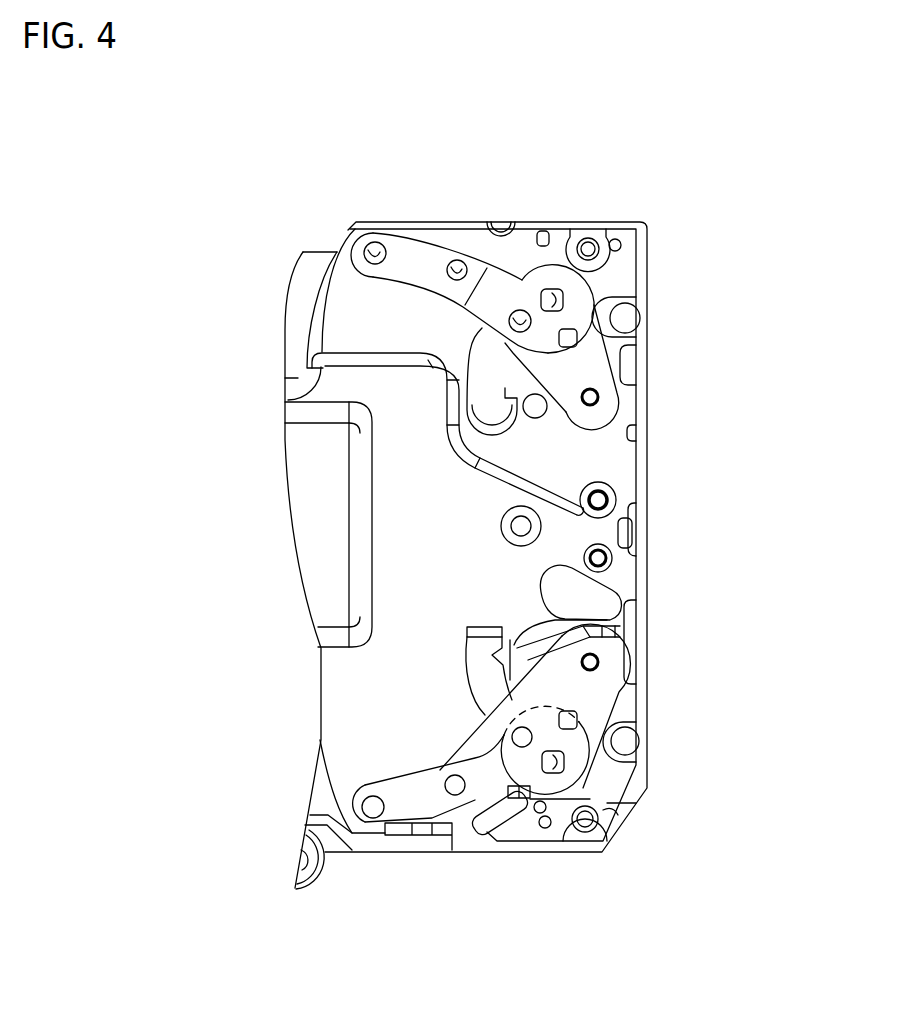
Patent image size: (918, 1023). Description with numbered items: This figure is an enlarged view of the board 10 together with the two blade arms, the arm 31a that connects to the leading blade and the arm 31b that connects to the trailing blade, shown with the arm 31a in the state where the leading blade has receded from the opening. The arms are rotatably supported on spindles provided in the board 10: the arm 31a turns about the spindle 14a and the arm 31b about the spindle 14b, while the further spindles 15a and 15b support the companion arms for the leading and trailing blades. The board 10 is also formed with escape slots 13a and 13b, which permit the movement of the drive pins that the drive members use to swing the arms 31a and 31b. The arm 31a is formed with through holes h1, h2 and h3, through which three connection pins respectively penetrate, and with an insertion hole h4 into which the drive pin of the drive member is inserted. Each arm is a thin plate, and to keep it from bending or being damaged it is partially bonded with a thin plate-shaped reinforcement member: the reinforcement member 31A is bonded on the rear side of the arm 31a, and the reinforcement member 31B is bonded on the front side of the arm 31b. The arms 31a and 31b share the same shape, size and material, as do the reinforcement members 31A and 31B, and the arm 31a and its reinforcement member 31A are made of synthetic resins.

The board 10 is at (652, 346).
The reinforcement member 31B is at (541, 282).
The reinforcement member 31A is at (497, 768).
The arm 31a is at (620, 697).
The arm 31b is at (597, 308).
The escape slot 13a is at (560, 618).
The escape slot 13b is at (488, 405).
The spindle 14a is at (599, 663).
The spindle 14b is at (599, 397).
The spindle 15a is at (606, 560).
The spindle 15b is at (608, 500).
The through hole h1 is at (376, 242).
The through hole h2 is at (457, 260).
The through hole h3 is at (519, 310).
The insertion hole h4 is at (595, 312).